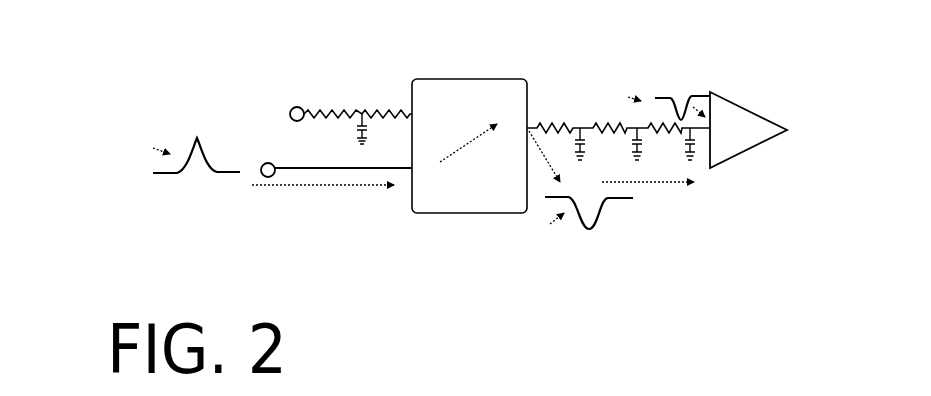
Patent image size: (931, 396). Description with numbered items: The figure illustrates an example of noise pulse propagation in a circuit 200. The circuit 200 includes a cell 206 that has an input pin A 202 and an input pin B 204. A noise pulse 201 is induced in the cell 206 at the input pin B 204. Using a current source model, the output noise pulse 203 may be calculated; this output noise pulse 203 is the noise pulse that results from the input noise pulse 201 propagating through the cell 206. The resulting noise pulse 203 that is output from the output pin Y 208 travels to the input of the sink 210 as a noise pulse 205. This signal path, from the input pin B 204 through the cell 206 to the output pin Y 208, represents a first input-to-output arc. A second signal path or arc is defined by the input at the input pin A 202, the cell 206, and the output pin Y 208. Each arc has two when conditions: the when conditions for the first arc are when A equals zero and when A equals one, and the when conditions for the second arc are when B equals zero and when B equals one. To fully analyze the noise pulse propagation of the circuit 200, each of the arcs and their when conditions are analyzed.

The circuit 200 is at (258, 45).
The noise pulse 201 is at (177, 174).
The input pin A 202 is at (294, 110).
The output noise pulse 203 is at (591, 229).
The input pin B 204 is at (268, 178).
The noise pulse 205 is at (685, 113).
The cell 206 is at (425, 78).
The output pin Y 208 is at (529, 123).
The sink 210 is at (757, 113).